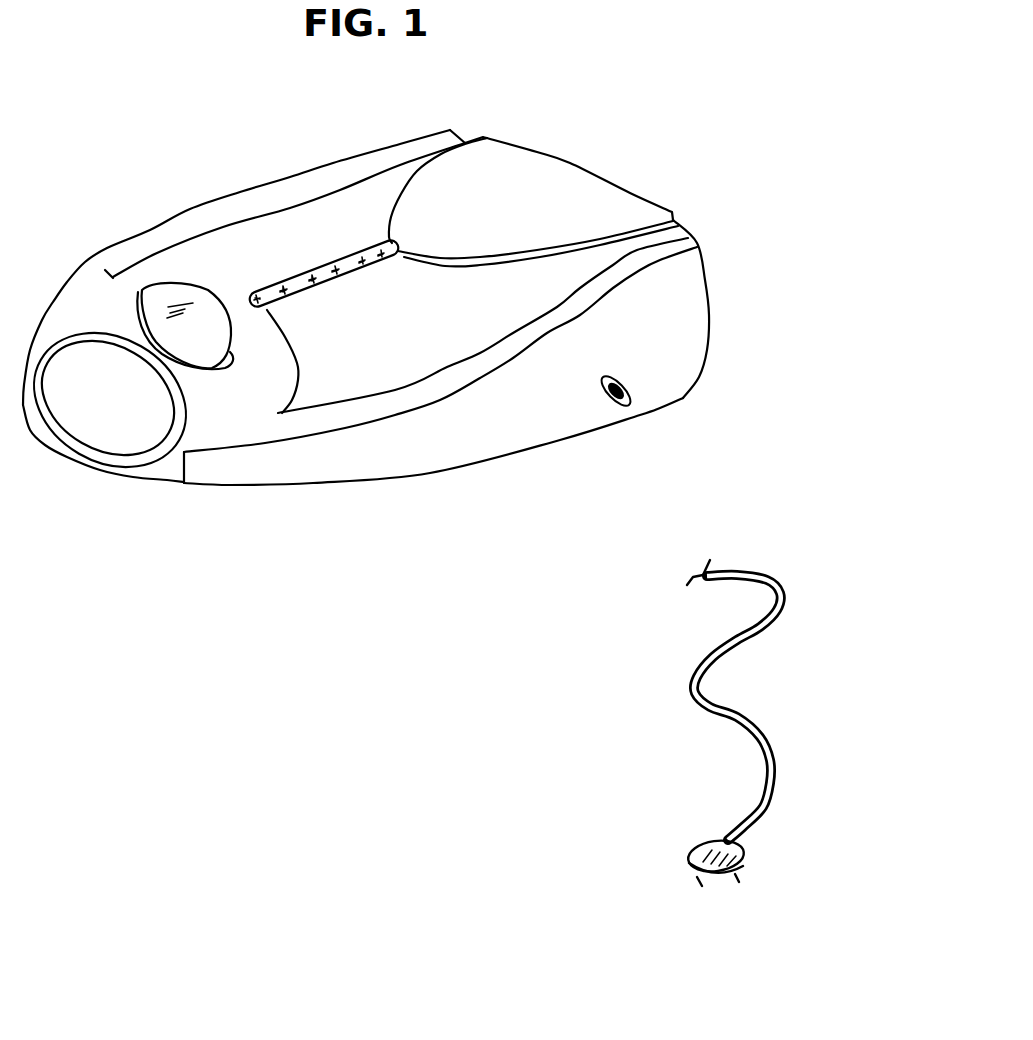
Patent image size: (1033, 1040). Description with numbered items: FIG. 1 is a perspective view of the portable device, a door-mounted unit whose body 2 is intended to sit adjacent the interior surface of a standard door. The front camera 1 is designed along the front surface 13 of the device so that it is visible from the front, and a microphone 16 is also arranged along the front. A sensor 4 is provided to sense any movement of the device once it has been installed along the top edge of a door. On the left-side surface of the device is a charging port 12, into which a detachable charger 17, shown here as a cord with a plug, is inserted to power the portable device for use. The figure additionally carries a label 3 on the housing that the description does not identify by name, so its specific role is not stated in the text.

The front camera 1 is at (165, 290).
The body 2 is at (490, 207).
The housing side panel 3 is at (523, 295).
The sensor 4 is at (105, 407).
The charging port 12 is at (622, 400).
The front surface 13 is at (297, 252).
The microphone 16 is at (303, 283).
The detachable charger 17 is at (740, 638).